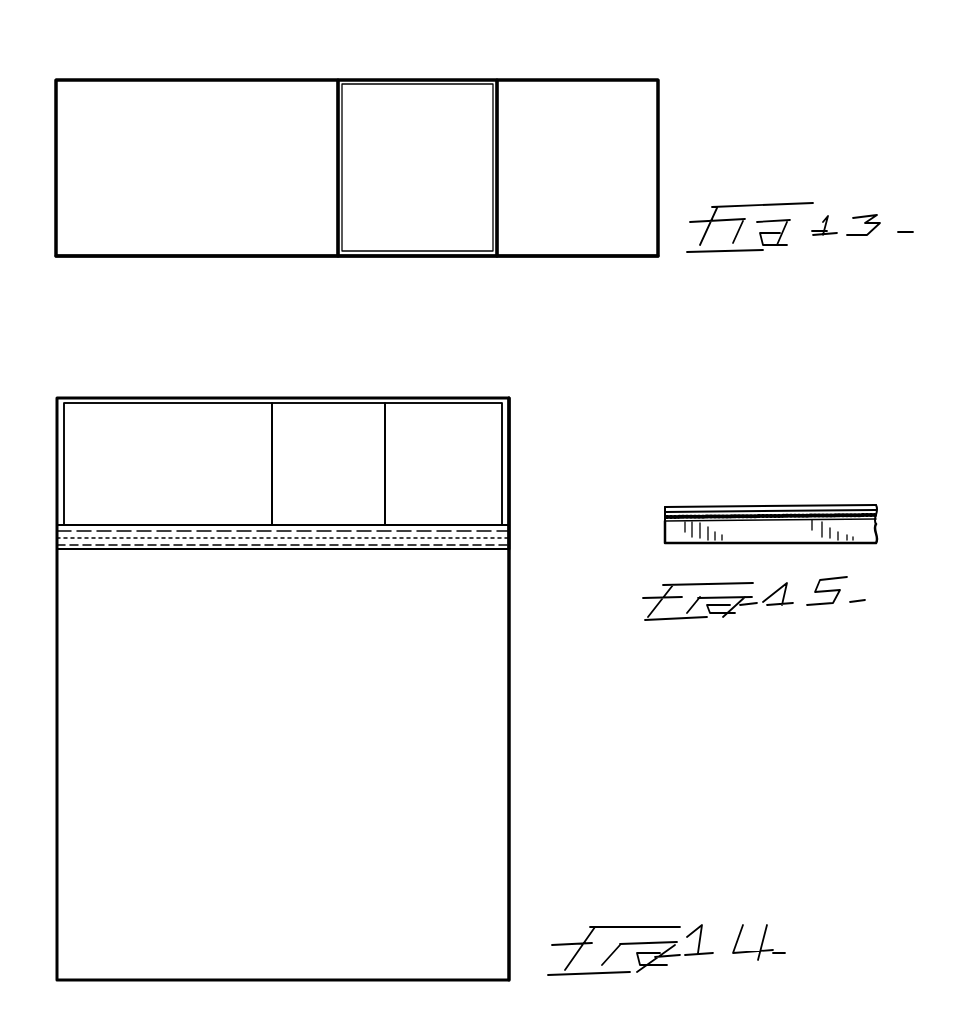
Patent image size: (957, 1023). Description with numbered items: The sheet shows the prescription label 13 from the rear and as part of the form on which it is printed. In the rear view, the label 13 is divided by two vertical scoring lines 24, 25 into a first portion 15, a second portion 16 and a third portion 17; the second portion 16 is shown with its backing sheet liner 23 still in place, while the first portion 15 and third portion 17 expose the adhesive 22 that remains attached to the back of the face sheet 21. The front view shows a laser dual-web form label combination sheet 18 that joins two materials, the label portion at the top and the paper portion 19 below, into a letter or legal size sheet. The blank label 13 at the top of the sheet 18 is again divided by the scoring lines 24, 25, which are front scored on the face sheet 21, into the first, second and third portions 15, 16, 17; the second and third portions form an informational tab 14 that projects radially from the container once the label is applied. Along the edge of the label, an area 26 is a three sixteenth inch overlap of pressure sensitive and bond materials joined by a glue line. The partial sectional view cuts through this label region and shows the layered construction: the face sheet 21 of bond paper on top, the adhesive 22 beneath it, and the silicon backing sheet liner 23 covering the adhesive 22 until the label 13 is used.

In FIG. 13, the prescription label 13 is at (674, 104).
In FIG. 14, the informational tab 14 is at (366, 432).
In FIG. 13, the first portion 15 is at (150, 78).
In FIG. 14, the first portion 15 is at (172, 476).
In FIG. 13, the second portion 16 is at (400, 80).
In FIG. 14, the second portion 16 is at (326, 476).
In FIG. 13, the third portion 17 is at (575, 80).
In FIG. 14, the third portion 17 is at (452, 473).
In FIG. 14, the laser dual-web form label combination sheet 18 is at (532, 806).
In FIG. 14, the paper portion 19 is at (516, 720).
In FIG. 14, the face sheet 21 is at (250, 430).
In FIG. 15, the face sheet 21 is at (706, 553).
In FIG. 13, the adhesive 22 is at (177, 237).
In FIG. 14, the adhesive 22 is at (512, 542).
In FIG. 15, the adhesive 22 is at (665, 517).
In FIG. 13, the backing sheet liner 23 is at (428, 184).
In FIG. 15, the backing sheet liner 23 is at (727, 507).
In FIG. 13, the vertical scoring line 24 is at (338, 80).
In FIG. 14, the vertical scoring line 24 is at (272, 398).
In FIG. 13, the vertical scoring line 25 is at (497, 79).
In FIG. 14, the vertical scoring line 25 is at (385, 398).
In FIG. 14, the overlap area 26 is at (516, 505).